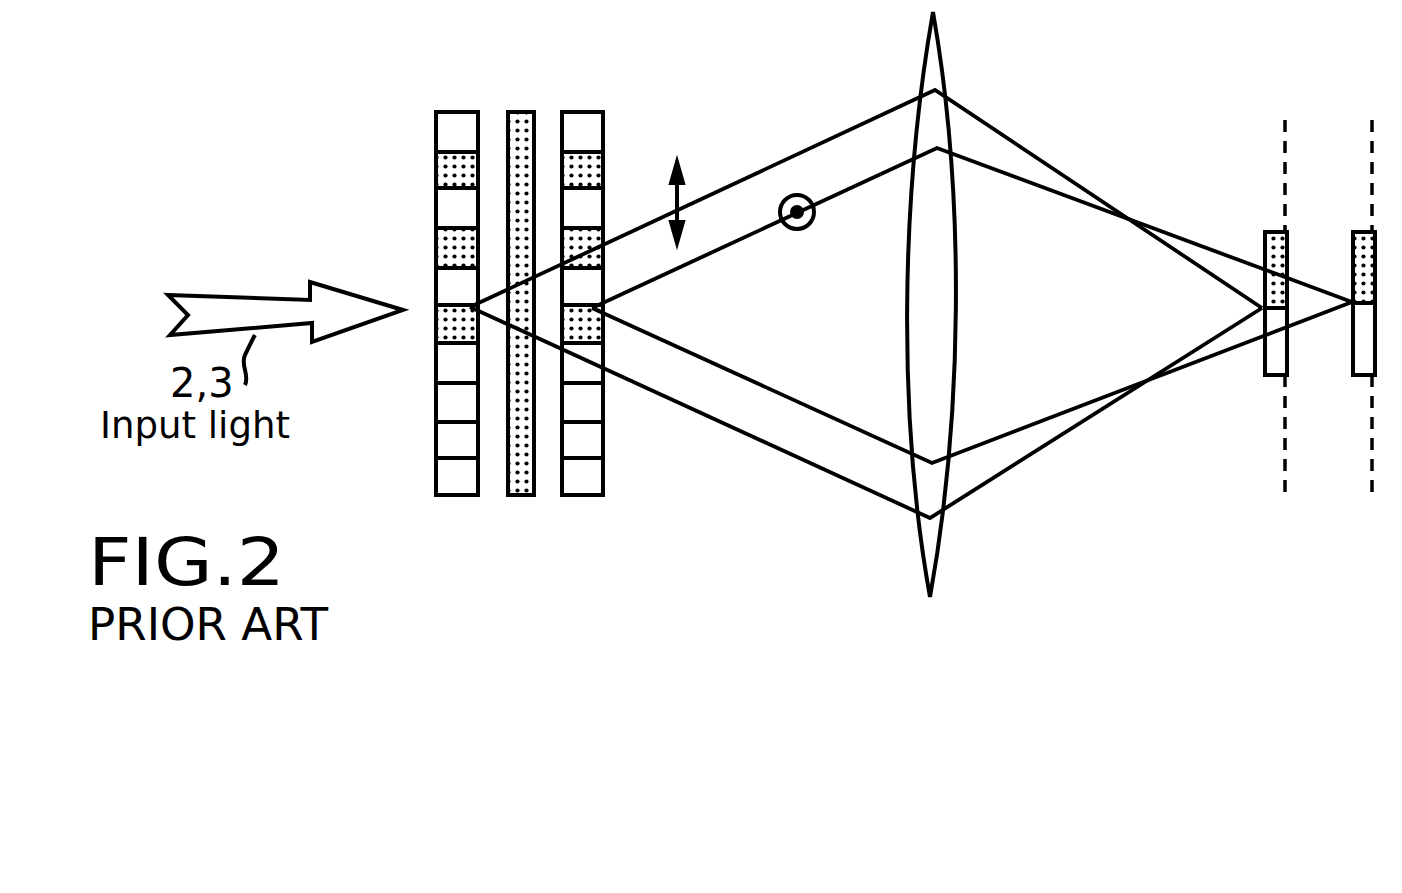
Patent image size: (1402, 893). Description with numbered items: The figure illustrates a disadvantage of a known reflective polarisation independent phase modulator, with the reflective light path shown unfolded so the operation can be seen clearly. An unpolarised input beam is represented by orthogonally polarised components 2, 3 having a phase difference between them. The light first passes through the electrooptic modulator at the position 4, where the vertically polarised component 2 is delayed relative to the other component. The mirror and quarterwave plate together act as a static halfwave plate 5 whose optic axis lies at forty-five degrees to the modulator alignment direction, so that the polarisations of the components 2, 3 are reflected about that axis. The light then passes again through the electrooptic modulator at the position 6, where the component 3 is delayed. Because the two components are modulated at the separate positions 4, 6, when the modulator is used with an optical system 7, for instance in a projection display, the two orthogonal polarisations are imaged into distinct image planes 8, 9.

The vertically polarised component 2 is at (772, 392).
The horizontally polarised component 3 is at (755, 440).
The electrooptic modulator 4 is at (438, 497).
The static halfwave plate 5 is at (510, 497).
The electrooptic modulator 6 is at (580, 497).
The optical system 7 is at (947, 72).
The image plane 8 is at (1283, 160).
The image plane 9 is at (1372, 160).